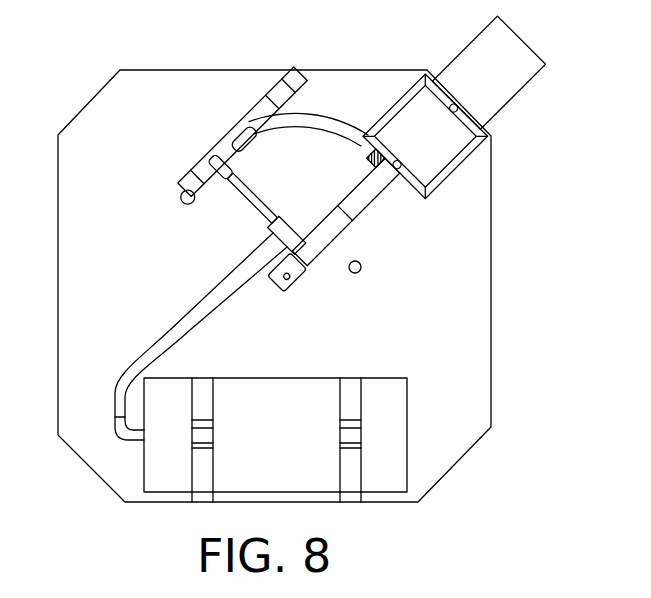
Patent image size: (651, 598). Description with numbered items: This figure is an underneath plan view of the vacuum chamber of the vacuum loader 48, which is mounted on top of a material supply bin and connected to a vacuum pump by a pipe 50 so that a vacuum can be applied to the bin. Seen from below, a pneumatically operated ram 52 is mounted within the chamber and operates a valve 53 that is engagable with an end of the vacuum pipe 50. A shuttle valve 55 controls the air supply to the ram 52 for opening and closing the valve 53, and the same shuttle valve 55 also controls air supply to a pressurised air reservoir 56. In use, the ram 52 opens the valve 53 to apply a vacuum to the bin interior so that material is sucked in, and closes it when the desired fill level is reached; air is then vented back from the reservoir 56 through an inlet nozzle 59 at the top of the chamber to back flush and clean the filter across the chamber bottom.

The vacuum loader 48 is at (491, 303).
The pipe 50 is at (490, 58).
The pneumatically operated ram 52 is at (318, 247).
The valve 53 is at (442, 157).
The shuttle valve 55 is at (223, 132).
The pressurised air reservoir 56 is at (390, 388).
The inlet nozzle 59 is at (361, 266).